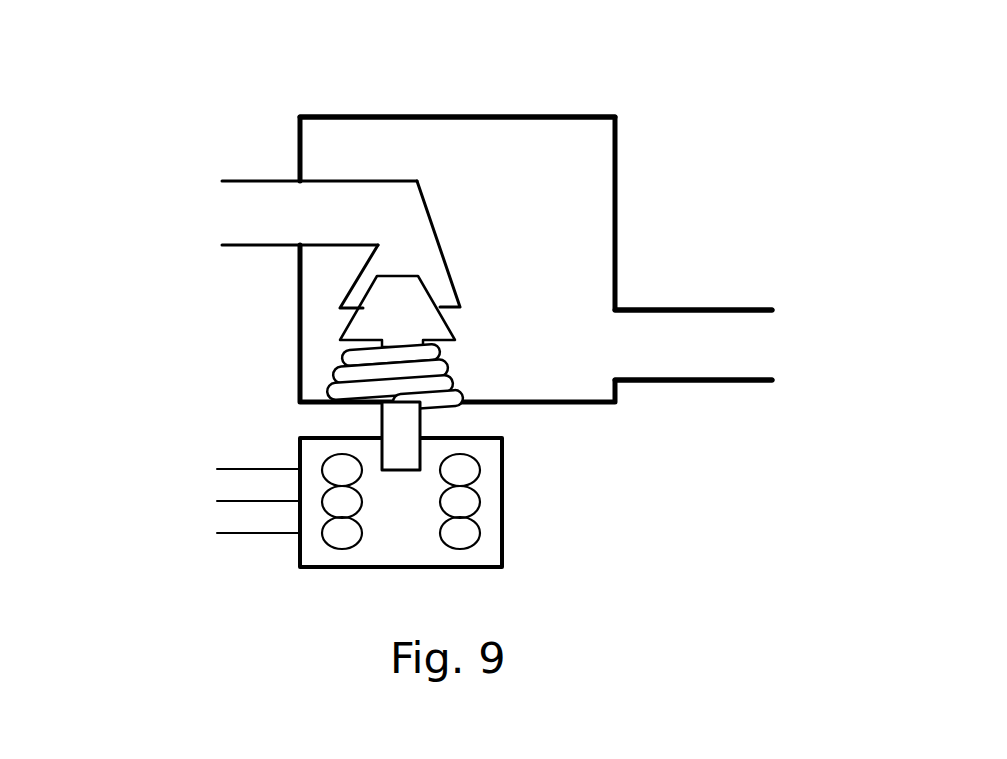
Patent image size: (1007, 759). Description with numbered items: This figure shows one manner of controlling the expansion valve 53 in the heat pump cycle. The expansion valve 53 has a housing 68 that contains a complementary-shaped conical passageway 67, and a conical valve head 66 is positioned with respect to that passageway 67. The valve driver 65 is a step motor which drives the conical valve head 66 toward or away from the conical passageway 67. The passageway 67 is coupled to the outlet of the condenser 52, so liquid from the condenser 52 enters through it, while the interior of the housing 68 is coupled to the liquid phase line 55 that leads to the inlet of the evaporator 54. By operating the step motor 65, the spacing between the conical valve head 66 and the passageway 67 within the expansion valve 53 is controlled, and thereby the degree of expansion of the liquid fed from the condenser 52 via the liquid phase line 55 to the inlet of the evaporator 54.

The condenser 52 is at (212, 215).
The expansion valve 53 is at (686, 128).
The evaporator 54 is at (727, 341).
The liquid phase line 55 is at (683, 309).
The valve driver 65 is at (502, 505).
The conical valve head 66 is at (450, 327).
The conical passageway 67 is at (437, 258).
The housing 68 is at (490, 114).